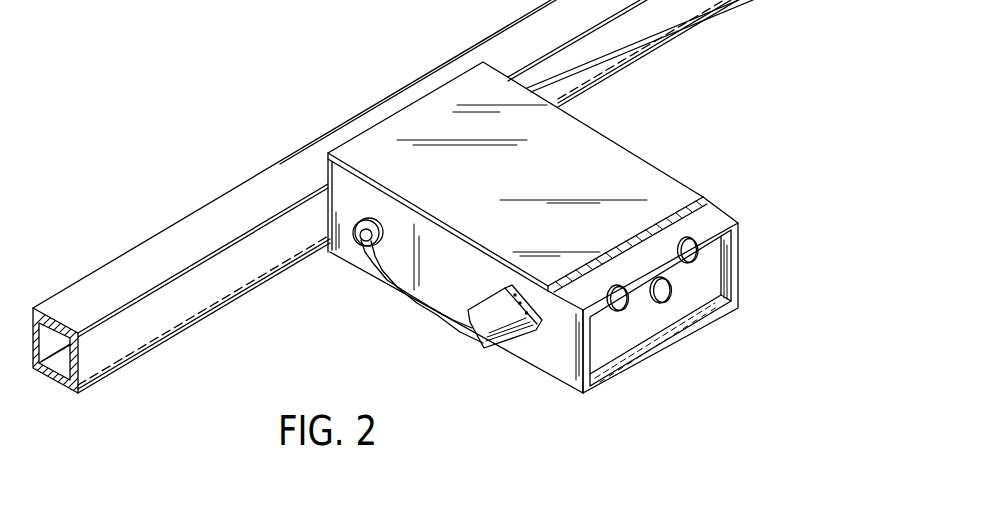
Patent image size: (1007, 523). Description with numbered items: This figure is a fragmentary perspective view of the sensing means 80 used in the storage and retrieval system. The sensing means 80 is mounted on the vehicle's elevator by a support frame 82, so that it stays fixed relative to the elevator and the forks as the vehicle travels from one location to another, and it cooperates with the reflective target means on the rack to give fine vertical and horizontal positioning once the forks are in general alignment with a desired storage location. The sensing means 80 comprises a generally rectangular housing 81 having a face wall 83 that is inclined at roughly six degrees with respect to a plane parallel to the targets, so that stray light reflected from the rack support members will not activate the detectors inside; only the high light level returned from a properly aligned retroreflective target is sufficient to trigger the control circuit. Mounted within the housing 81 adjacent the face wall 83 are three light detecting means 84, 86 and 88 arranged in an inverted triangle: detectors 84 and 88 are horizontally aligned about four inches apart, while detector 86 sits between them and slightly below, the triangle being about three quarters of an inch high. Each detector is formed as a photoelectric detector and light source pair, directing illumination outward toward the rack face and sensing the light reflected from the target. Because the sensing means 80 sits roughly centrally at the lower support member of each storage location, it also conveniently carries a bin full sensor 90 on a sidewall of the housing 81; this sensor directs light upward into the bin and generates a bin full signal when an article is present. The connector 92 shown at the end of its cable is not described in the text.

The sensing means 80 is at (658, 152).
The housing 81 is at (510, 212).
The support frame 82 is at (834, 0).
The face wall 83 is at (702, 290).
The light detecting means 84 is at (620, 312).
The light detecting means 86 is at (664, 302).
The light detecting means 88 is at (695, 260).
The bin full sensor 90 is at (483, 356).
The connector plug 92 is at (537, 327).